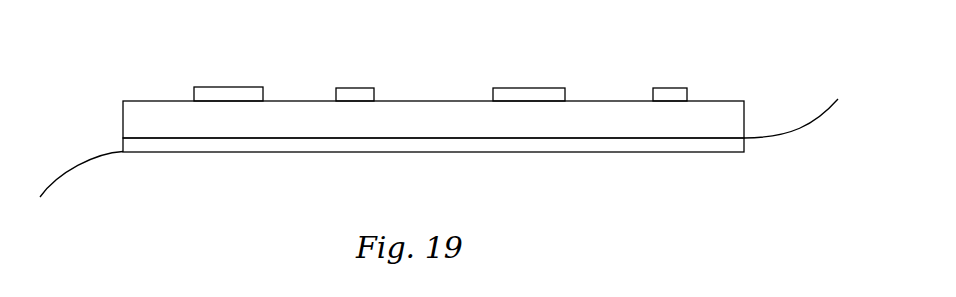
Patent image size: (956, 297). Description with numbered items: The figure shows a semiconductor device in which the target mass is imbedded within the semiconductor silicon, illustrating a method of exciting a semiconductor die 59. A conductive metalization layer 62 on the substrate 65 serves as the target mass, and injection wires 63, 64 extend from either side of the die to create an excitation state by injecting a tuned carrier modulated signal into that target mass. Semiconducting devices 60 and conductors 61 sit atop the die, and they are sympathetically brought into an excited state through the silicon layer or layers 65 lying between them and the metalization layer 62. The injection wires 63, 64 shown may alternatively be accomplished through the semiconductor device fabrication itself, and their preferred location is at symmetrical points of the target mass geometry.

The semiconductor die 59 is at (134, 67).
The semiconducting devices 60 is at (238, 81).
The conductors 61 is at (359, 82).
The conductive metalization layer 62 is at (549, 155).
The injection wire 63 is at (47, 199).
The injection wire 64 is at (848, 102).
The substrate 65 is at (123, 119).